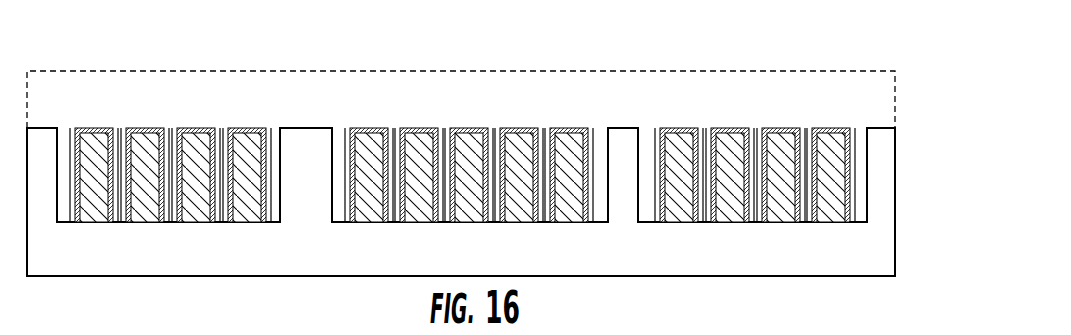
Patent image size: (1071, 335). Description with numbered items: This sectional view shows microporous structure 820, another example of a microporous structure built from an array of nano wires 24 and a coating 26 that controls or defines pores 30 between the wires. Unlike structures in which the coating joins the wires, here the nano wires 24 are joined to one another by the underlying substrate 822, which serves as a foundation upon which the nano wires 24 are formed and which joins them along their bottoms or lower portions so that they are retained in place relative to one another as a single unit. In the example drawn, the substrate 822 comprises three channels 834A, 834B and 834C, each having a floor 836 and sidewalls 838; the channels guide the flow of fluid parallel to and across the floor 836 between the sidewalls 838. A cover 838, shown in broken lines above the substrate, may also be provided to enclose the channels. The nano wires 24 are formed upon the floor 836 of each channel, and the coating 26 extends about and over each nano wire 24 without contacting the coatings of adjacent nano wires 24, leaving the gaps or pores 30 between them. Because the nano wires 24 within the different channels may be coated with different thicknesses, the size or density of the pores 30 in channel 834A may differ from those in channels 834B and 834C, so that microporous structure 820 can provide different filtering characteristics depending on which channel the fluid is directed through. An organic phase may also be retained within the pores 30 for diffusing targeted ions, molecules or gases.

The microporous structure 820 is at (480, 112).
The substrate 822 is at (895, 242).
The channel 834A is at (58, 147).
The channel 834B is at (333, 137).
The channel 834C is at (640, 137).
The floor 836 is at (145, 222).
The sidewalls 838 is at (143, 72).
The coating 26 is at (420, 128).
The pores 30 is at (490, 137).
The nano wires 24 is at (568, 137).